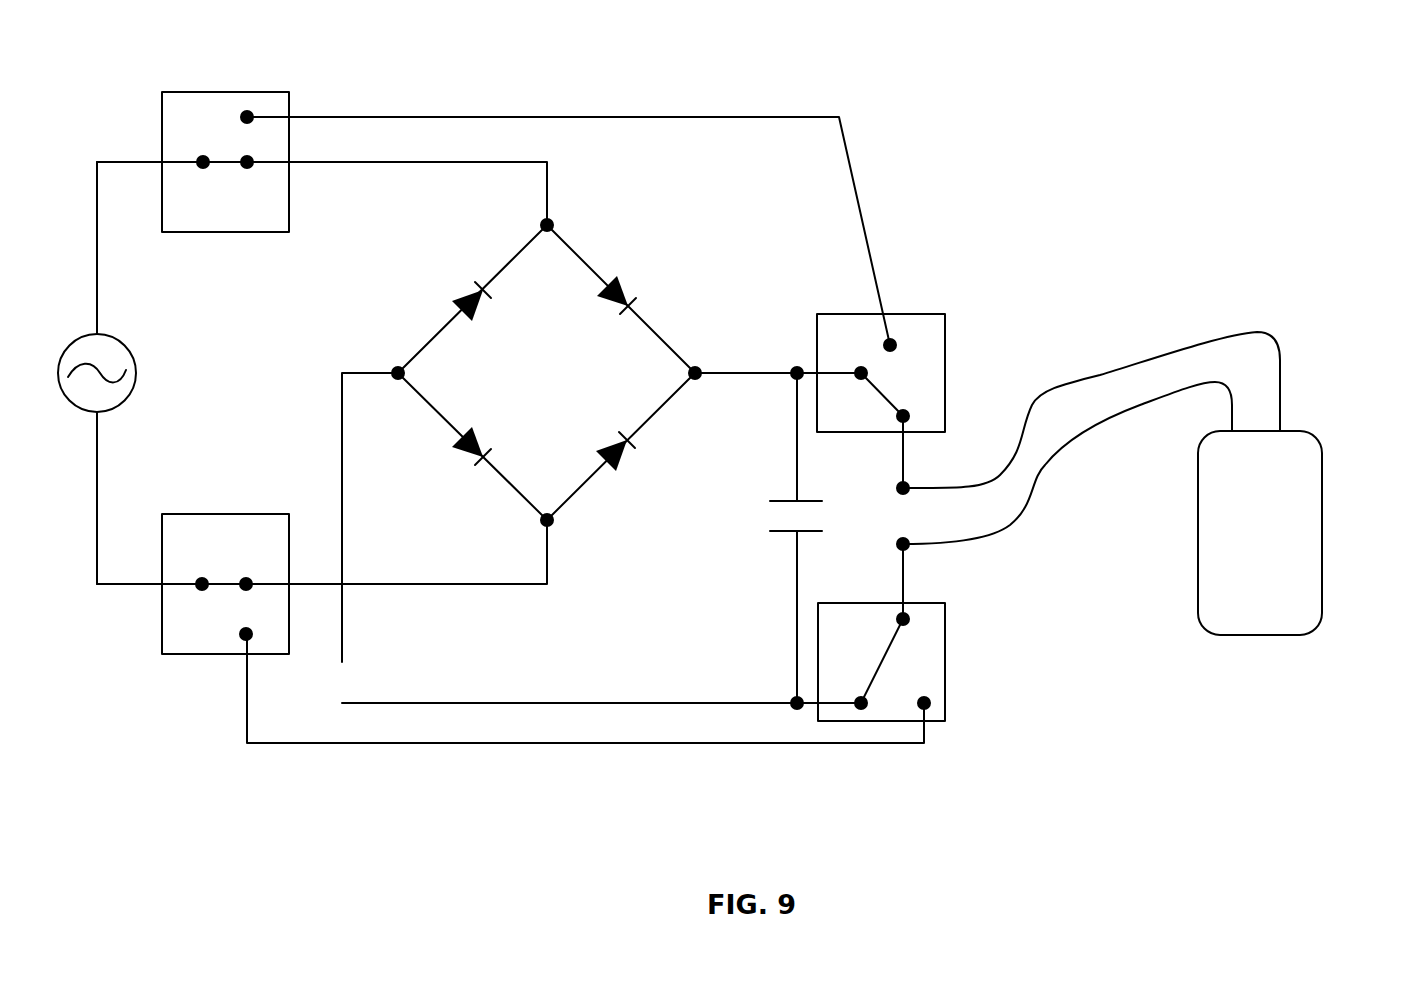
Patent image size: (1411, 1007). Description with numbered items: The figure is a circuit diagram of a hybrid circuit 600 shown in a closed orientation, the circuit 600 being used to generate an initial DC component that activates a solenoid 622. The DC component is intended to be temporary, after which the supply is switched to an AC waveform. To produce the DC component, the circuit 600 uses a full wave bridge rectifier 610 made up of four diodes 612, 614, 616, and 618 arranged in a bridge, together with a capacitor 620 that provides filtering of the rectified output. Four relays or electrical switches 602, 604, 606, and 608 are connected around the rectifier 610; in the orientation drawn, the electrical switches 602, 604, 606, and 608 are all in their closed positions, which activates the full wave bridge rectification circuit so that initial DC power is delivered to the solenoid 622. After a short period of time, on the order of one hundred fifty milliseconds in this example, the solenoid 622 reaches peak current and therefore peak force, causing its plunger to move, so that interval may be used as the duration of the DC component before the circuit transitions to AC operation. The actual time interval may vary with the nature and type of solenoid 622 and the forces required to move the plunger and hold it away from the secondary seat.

The circuit 600 is at (1206, 90).
The electrical switch 602 is at (238, 92).
The electrical switch 604 is at (161, 600).
The electrical switch 606 is at (930, 313).
The electrical switch 608 is at (947, 650).
The full wave bridge rectifier 610 is at (745, 323).
The diode 612 is at (465, 292).
The diode 614 is at (632, 298).
The diode 616 is at (470, 455).
The diode 618 is at (627, 455).
The capacitor 620 is at (785, 533).
The solenoid 622 is at (1322, 535).